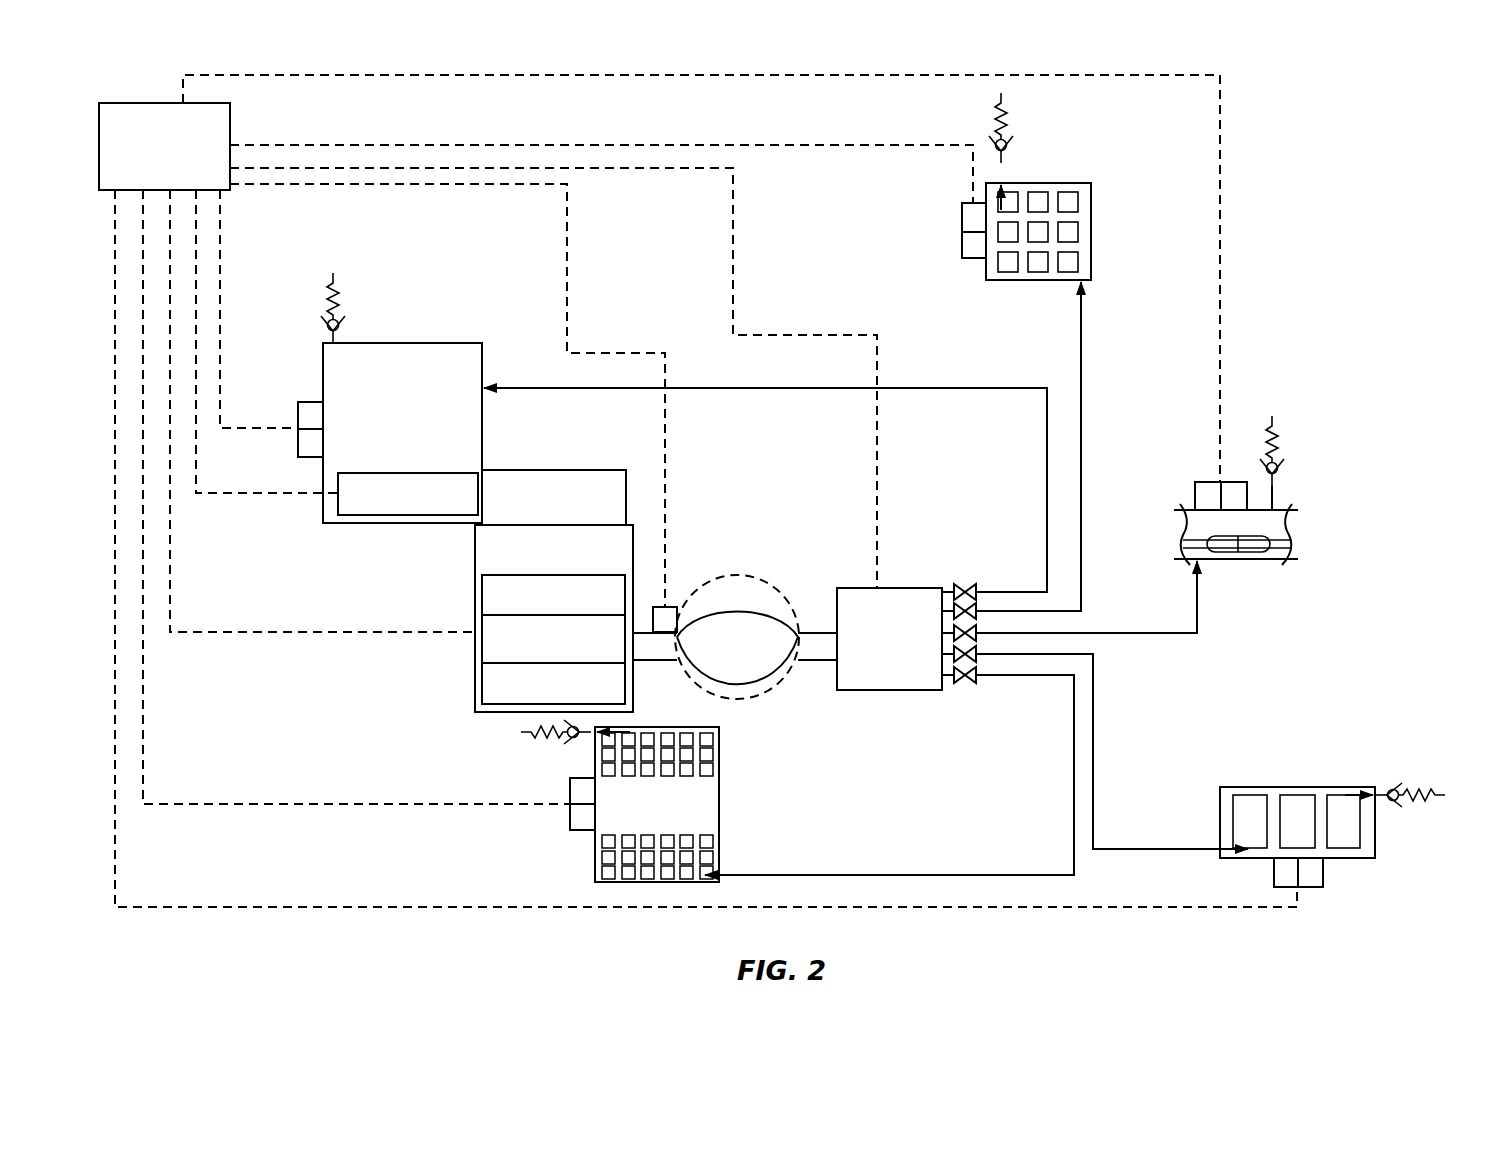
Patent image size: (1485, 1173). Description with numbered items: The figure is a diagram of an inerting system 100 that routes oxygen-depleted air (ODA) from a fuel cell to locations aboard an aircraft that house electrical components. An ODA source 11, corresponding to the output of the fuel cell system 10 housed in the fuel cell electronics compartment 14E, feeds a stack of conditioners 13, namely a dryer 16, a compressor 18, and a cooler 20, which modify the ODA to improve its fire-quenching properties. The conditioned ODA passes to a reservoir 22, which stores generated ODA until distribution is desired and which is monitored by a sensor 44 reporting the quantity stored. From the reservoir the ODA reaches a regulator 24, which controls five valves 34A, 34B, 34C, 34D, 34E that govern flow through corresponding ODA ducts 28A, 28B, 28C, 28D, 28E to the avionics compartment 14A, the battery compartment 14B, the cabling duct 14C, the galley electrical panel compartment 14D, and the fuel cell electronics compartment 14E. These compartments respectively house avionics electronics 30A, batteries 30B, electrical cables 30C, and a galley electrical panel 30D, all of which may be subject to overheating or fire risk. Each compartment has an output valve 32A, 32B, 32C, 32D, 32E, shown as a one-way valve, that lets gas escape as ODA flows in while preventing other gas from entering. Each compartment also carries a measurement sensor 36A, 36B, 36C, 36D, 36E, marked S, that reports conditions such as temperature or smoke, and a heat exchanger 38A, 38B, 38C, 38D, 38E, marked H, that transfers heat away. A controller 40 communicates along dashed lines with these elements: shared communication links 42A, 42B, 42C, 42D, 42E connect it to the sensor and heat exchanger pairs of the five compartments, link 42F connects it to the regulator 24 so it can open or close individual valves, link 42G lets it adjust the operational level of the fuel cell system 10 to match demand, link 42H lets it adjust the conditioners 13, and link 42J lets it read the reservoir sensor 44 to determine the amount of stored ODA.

The inerting system 100 is at (1280, 146).
The controller 40 is at (164, 146).
The communication link 42A is at (205, 805).
The communication link 42B is at (243, 908).
The communication link 42C is at (360, 76).
The communication link 42D is at (440, 144).
The communication link 42E is at (222, 262).
The communication link 42F is at (628, 168).
The communication link 42G is at (215, 494).
The communication link 42H is at (215, 633).
The communication link 42J is at (446, 185).
The avionics compartment 14A is at (720, 800).
The battery compartment 14B is at (1278, 787).
The cabling duct 14C is at (1255, 562).
The galley electrical panel compartment 14D is at (1093, 233).
The fuel cell electronics compartment 14E is at (402, 433).
The fuel cell system 10 is at (408, 494).
The ODA source 11 is at (554, 497).
The conditioners 13 is at (554, 618).
The dryer 16 is at (553, 595).
The compressor 18 is at (553, 639).
The cooler 20 is at (553, 683).
The reservoir 22 is at (735, 637).
The regulator 24 is at (889, 639).
The sensor 44 is at (672, 607).
The ODA duct 28A is at (1072, 830).
The ODA duct 28B is at (1095, 828).
The ODA duct 28C is at (1153, 633).
The ODA duct 28D is at (1085, 495).
The ODA duct 28E is at (1047, 498).
The valve 34A is at (970, 673).
The valve 34B is at (970, 652).
The valve 34C is at (970, 631).
The valve 34D is at (970, 609).
The valve 34E is at (970, 590).
The avionics electronics 30A is at (606, 879).
The batteries 30B is at (1266, 826).
The electrical cables 30C is at (1258, 538).
The galley electrical panel 30D is at (1012, 262).
The output valve 32A is at (530, 740).
The output valve 32B is at (1405, 803).
The output valve 32C is at (1282, 440).
The output valve 32D is at (1010, 118).
The output valve 32E is at (342, 300).
The measurement sensor 36A is at (580, 778).
The measurement sensor 36B is at (1286, 887).
The measurement sensor 36C is at (1203, 482).
The measurement sensor 36D is at (968, 203).
The measurement sensor 36E is at (300, 402).
The heat exchanger 38A is at (585, 830).
The heat exchanger 38B is at (1310, 887).
The heat exchanger 38C is at (1232, 482).
The heat exchanger 38D is at (978, 258).
The heat exchanger 38E is at (300, 457).